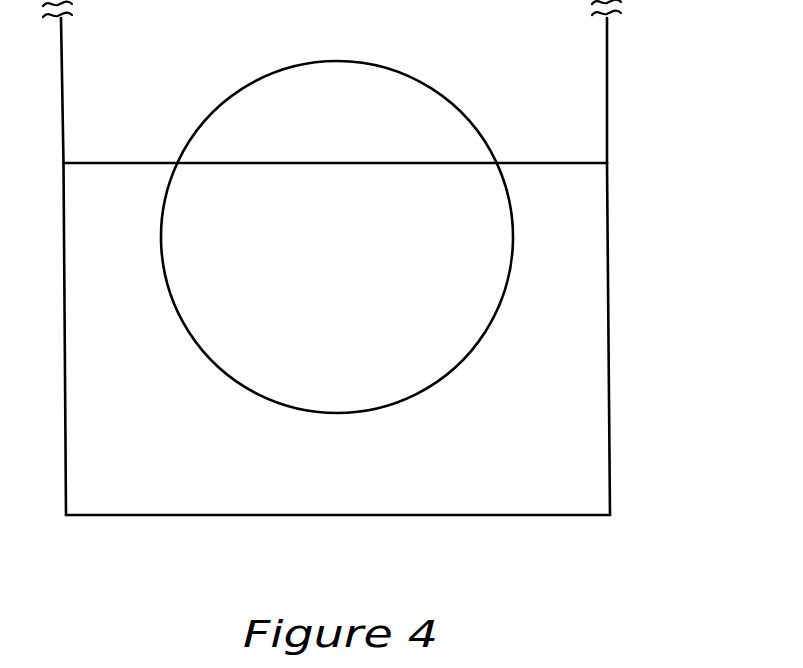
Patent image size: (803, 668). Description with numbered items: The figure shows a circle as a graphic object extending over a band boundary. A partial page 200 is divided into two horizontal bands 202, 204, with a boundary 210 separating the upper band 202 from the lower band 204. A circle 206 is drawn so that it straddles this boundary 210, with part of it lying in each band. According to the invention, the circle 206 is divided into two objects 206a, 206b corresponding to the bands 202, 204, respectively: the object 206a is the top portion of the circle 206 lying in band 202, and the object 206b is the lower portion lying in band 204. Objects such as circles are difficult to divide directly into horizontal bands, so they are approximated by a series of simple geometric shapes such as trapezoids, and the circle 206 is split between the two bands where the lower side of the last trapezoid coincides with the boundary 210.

The partial page 200 is at (368, 282).
The band 202 is at (607, 70).
The band 204 is at (610, 355).
The circle 206 is at (376, 242).
The object 206a is at (424, 82).
The object 206b is at (508, 276).
The boundary 210 is at (540, 164).